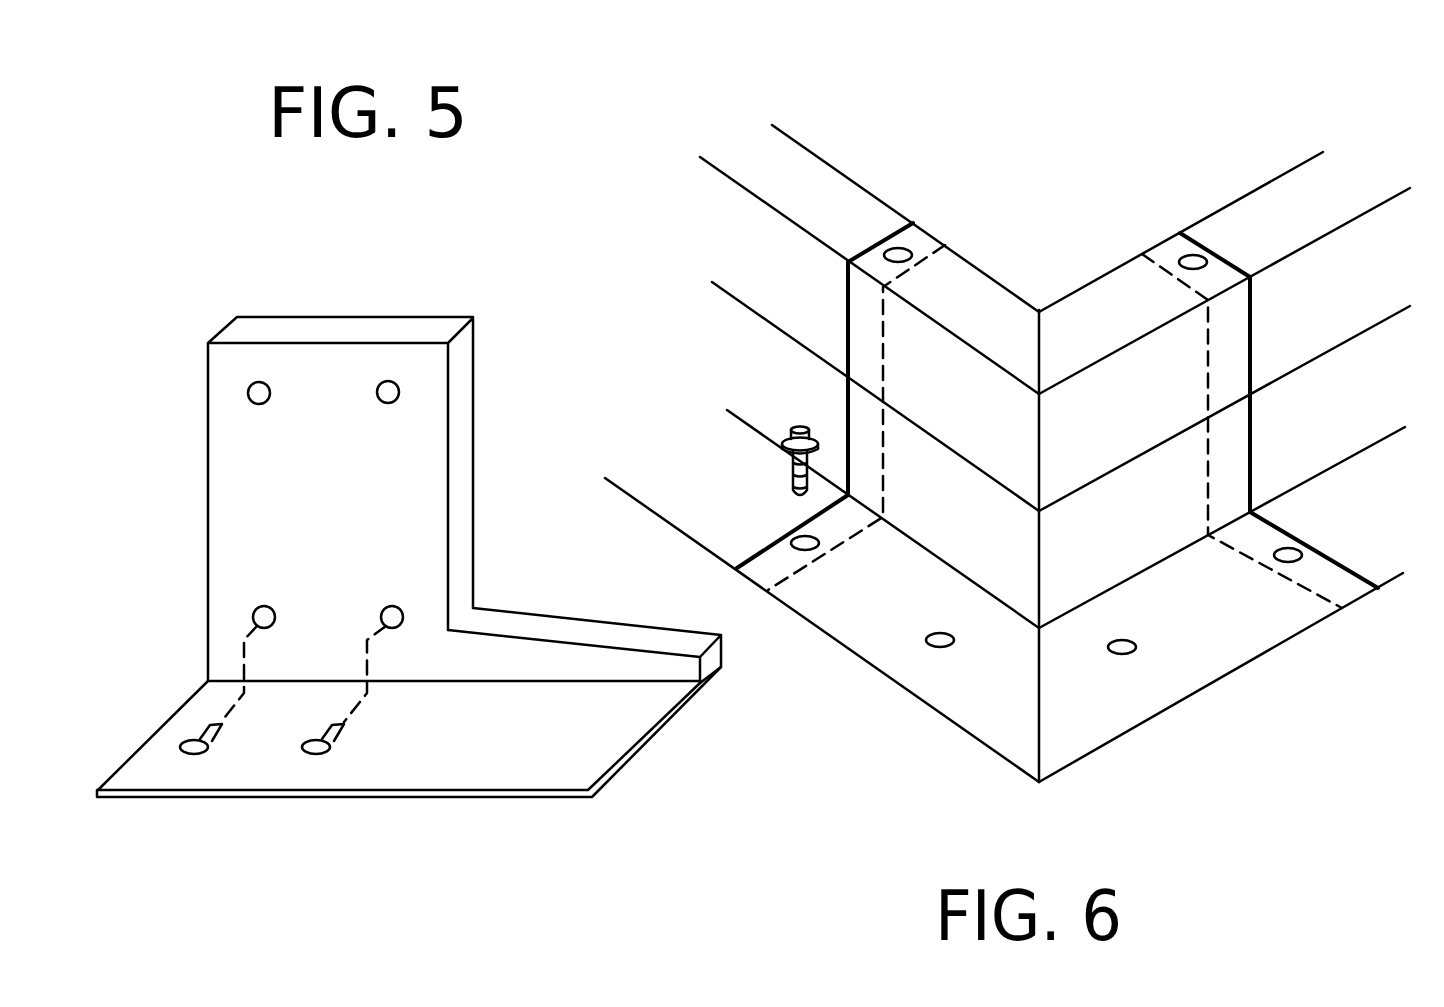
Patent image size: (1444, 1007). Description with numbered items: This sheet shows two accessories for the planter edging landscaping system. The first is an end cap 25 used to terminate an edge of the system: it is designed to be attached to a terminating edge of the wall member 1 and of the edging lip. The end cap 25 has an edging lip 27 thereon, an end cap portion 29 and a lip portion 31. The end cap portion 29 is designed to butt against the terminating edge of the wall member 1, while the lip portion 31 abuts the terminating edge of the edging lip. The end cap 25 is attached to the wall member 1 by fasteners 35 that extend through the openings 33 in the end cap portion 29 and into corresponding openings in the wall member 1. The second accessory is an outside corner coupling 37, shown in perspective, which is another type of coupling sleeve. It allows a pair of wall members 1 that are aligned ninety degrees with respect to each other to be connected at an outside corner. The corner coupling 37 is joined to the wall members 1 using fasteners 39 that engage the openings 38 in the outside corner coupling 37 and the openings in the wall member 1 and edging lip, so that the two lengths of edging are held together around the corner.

In FIG. 5, the end cap 25 is at (527, 274).
In FIG. 5, the edging lip 27 is at (409, 764).
In FIG. 5, the end cap portion 29 is at (340, 519).
In FIG. 5, the lip portion 31 is at (608, 628).
In FIG. 5, the openings 33 is at (393, 605).
In FIG. 5, the fasteners 35 is at (184, 749).
In FIG. 6, the wall member 1 is at (837, 195).
In FIG. 6, the outside corner coupling 37 is at (1186, 756).
In FIG. 6, the openings 38 is at (898, 247).
In FIG. 6, the fasteners 39 is at (799, 422).